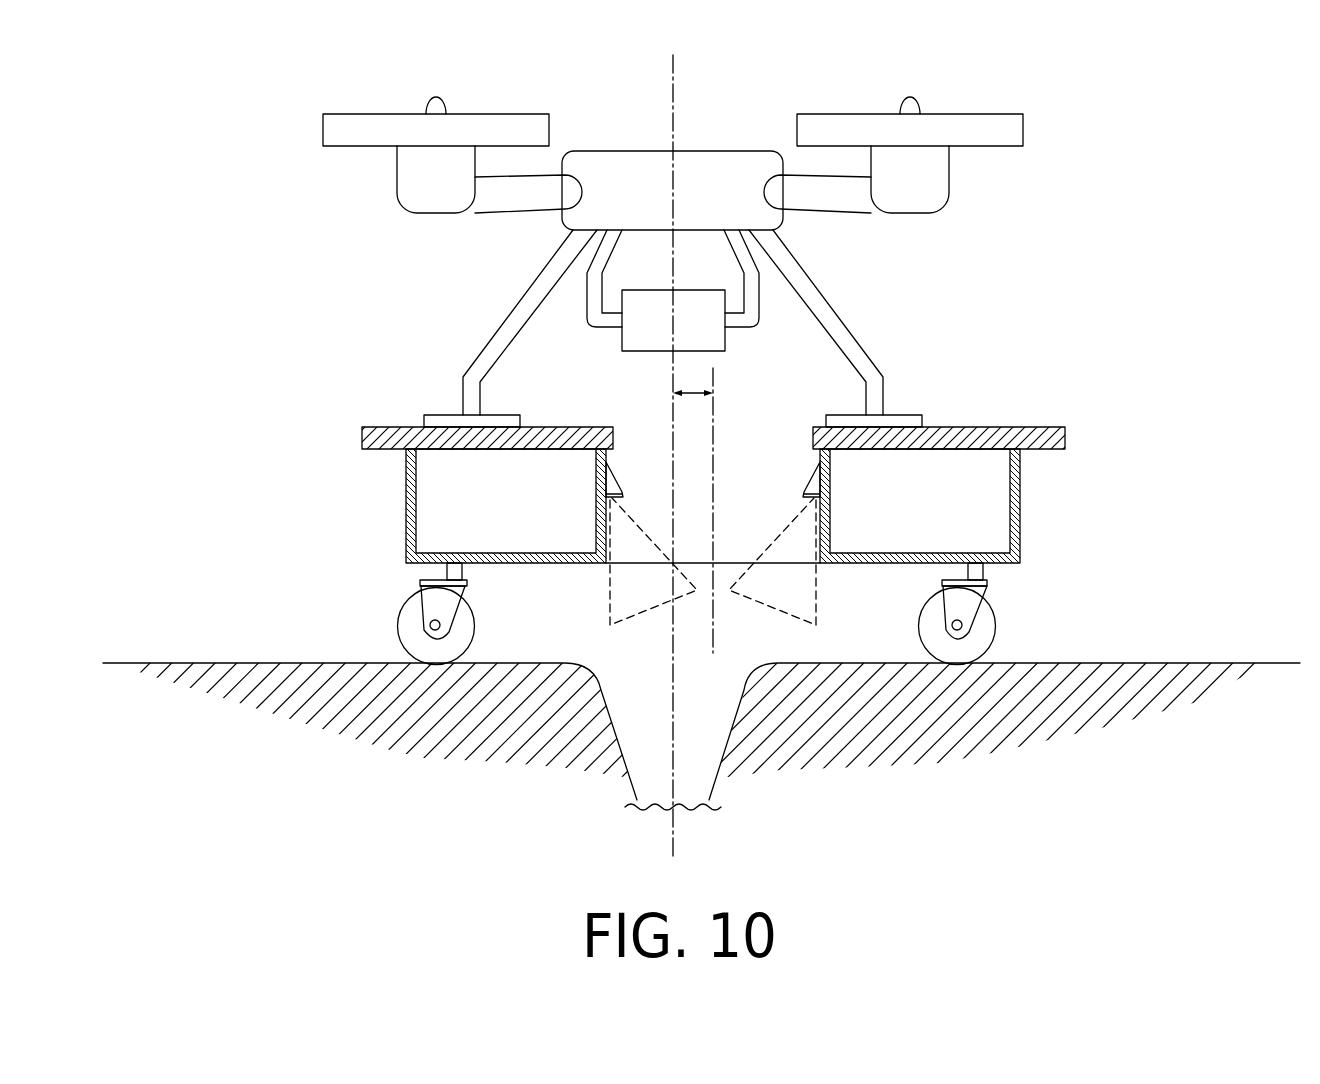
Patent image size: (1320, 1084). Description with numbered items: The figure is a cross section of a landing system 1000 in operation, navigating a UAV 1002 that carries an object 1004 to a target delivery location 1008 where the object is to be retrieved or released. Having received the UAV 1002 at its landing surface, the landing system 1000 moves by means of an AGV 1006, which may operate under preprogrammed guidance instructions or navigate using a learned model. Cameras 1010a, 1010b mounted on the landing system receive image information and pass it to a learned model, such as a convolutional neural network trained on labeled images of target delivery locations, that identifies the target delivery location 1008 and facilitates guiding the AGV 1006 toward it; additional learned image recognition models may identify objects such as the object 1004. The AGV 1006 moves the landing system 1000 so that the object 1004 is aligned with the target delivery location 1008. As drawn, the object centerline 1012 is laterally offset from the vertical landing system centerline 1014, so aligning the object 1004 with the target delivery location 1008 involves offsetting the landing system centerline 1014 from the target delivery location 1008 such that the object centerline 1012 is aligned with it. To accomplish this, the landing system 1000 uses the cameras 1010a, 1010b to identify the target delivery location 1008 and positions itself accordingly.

The landing system 1000 is at (357, 400).
The UAV 1002 is at (356, 77).
The object 1004 is at (622, 342).
The AGV 1006 is at (406, 503).
The target delivery location 1008 is at (615, 727).
The camera 1010a is at (606, 483).
The camera 1010b is at (820, 483).
The object centerline 1012 is at (672, 368).
The landing system centerline 1014 is at (713, 412).